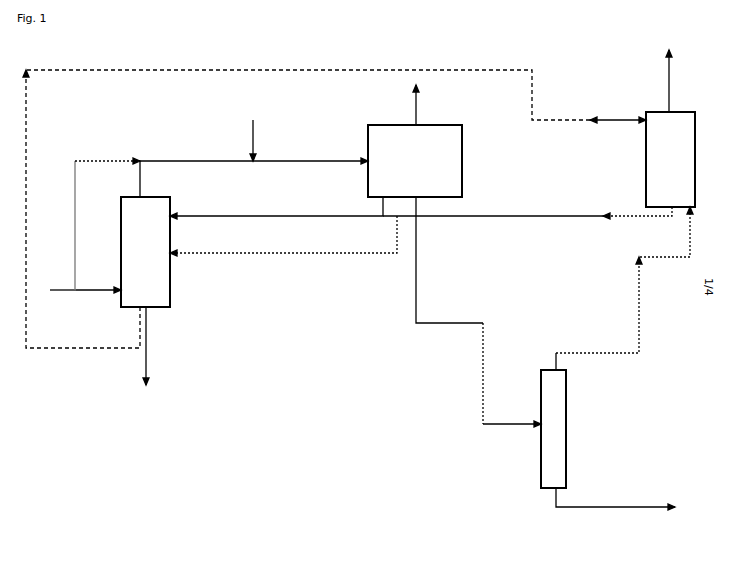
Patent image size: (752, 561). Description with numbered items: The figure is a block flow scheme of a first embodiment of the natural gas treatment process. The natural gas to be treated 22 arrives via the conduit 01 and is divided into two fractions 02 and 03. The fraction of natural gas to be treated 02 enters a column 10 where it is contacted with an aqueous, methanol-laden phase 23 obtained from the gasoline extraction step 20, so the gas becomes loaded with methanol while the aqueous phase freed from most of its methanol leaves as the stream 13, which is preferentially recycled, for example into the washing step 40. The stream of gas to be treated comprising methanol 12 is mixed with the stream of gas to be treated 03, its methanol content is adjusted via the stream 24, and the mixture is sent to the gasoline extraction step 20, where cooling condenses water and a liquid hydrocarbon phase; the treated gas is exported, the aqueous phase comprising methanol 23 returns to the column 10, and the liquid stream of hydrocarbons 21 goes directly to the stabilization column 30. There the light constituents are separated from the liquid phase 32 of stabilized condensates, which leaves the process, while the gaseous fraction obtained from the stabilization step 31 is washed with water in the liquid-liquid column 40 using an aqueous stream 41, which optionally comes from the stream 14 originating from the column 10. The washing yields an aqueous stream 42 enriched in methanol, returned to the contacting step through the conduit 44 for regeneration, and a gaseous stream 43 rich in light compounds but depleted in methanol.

The column 10 is at (121, 232).
The gasoline extraction step 20 is at (462, 139).
The stabilization column 30 is at (541, 458).
The liquid-liquid column 40 is at (680, 112).
The conduit 01 is at (67, 288).
The fraction of natural gas to be treated 02 is at (108, 289).
The stream of gas to be treated 03 is at (82, 159).
The stream of gas to be treated comprising methanol 12 is at (143, 191).
The stream 13 is at (147, 352).
The stream 14 is at (78, 348).
The liquid stream of hydrocarbons 21 is at (418, 256).
The natural gas to be treated 22 is at (416, 108).
The aqueous phase comprising methanol 23 is at (312, 212).
The stream 24 is at (253, 127).
The gaseous fraction obtained from the stabilization step 31 is at (640, 304).
The liquid phase 32 is at (650, 508).
The aqueous stream 41 is at (609, 116).
The aqueous stream 42 is at (672, 216).
The gaseous stream 43 is at (670, 74).
The conduit 44 is at (230, 254).